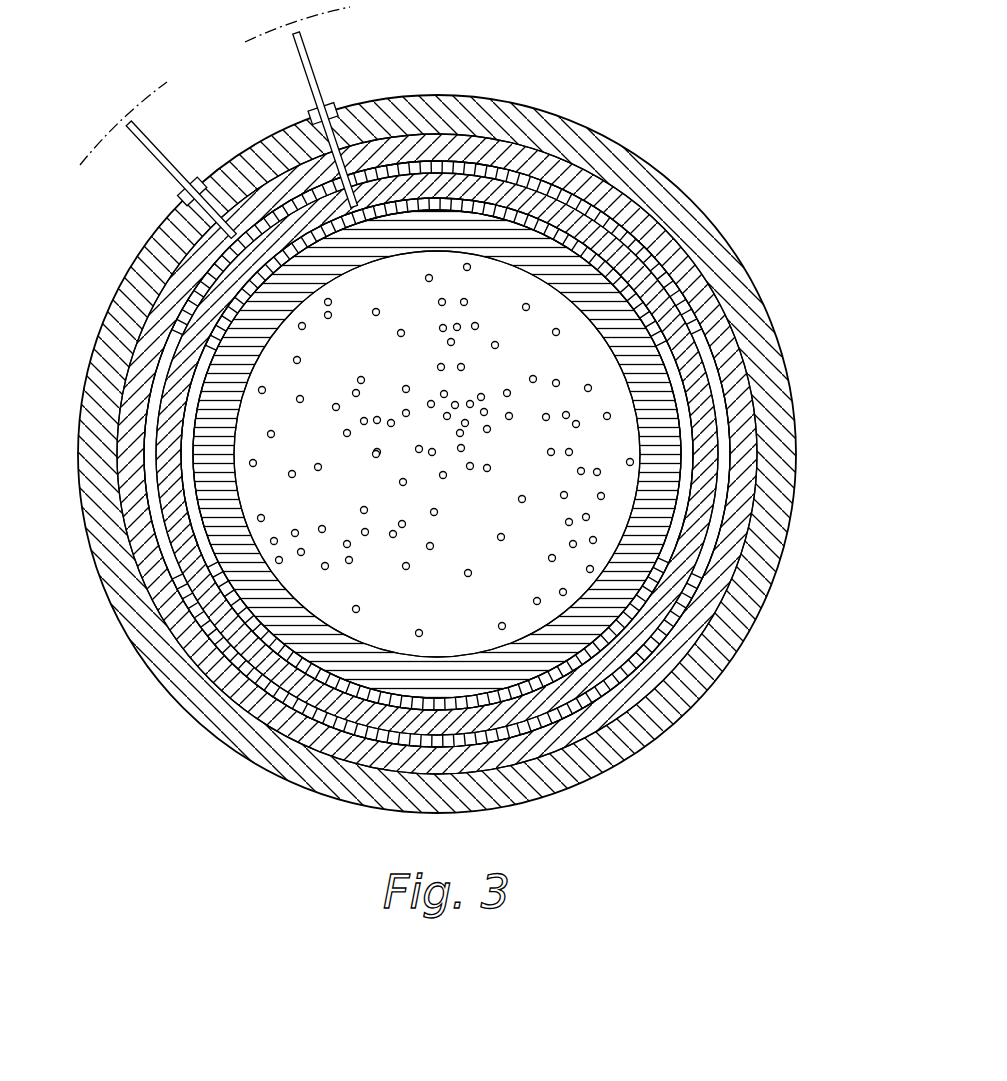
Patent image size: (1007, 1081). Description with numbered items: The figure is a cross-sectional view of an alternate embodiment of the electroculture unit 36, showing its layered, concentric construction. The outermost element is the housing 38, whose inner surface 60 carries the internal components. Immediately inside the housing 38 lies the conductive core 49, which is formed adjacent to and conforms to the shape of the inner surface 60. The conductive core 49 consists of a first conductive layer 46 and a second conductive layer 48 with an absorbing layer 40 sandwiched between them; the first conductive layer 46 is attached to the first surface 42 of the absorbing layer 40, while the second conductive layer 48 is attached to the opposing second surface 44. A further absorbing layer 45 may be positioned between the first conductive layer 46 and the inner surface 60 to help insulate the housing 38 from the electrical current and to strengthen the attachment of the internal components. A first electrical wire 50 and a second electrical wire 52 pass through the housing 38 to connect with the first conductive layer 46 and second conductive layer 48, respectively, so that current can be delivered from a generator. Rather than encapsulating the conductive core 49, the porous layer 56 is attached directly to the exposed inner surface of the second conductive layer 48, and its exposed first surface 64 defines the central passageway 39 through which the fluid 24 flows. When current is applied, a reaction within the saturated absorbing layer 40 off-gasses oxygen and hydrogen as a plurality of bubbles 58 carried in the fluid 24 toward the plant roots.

The fluid 24 is at (315, 595).
The electroculture unit 36 is at (618, 83).
The housing 38 is at (467, 83).
The passageway 39 is at (576, 350).
The absorbing layer 40 is at (695, 395).
The first surface 42 is at (595, 210).
The second surface 44 is at (535, 180).
The further absorbing layer 45 is at (140, 400).
The first conductive layer 46 is at (290, 205).
The second conductive layer 48 is at (410, 145).
The conductive core 49 is at (360, 133).
The first electrical wire 50 is at (150, 152).
The second electrical wire 52 is at (300, 70).
The porous layer 56 is at (665, 495).
The bubbles 58 is at (406, 386).
The inner surface 60 is at (535, 180).
The first surface 64 is at (639, 450).